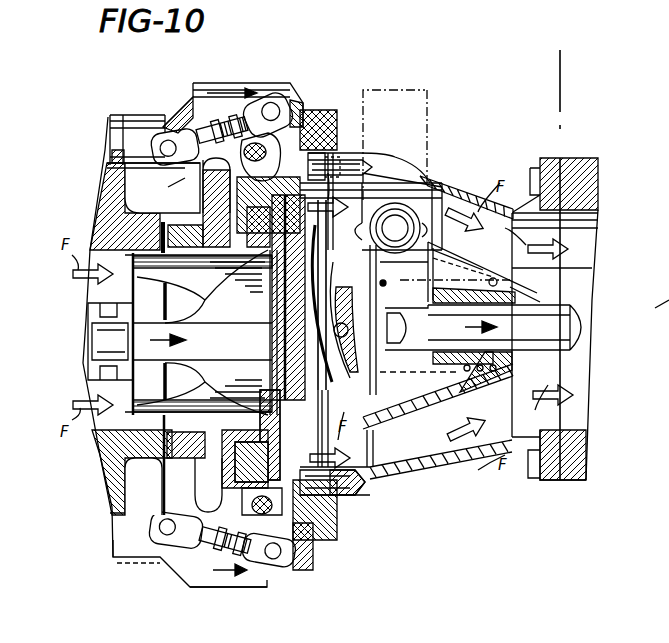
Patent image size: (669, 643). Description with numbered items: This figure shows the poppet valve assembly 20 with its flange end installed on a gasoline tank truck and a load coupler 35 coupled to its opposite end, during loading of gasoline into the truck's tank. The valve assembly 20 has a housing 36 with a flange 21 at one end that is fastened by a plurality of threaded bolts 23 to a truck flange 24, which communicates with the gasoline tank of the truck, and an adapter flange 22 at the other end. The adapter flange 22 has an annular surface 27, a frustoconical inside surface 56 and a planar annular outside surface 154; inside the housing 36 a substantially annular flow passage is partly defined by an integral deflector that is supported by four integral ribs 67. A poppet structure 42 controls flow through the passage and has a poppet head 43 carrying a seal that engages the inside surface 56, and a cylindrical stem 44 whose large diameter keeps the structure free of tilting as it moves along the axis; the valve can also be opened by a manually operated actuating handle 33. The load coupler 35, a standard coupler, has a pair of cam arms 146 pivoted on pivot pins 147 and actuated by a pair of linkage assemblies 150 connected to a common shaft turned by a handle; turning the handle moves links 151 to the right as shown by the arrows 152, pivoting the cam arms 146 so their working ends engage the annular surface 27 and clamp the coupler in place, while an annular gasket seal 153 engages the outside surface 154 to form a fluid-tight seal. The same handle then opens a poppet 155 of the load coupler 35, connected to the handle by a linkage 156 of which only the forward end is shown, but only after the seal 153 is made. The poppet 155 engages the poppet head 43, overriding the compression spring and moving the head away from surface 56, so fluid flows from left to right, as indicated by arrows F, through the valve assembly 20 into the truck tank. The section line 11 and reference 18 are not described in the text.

The section line 11 is at (575, 58).
The pump assembly 18 is at (662, 309).
The valve assembly 20 is at (455, 112).
The flange 21 is at (555, 158).
The adapter flange 22 is at (202, 334).
The threaded bolts 23 is at (513, 200).
The truck flange 24 is at (598, 156).
The annular surface 27 is at (330, 134).
The actuating handle 33 is at (410, 88).
The load coupler 35 is at (140, 110).
The housing 36 is at (456, 170).
The poppet structure 42 is at (364, 381).
The poppet head 43 is at (282, 352).
The cylindrical stem 44 is at (483, 348).
The frustoconical inside surface 56 is at (202, 286).
The integral ribs 67 is at (472, 462).
The cam arms 146 is at (292, 114).
The pivot pins 147 is at (315, 114).
The linkage assemblies 150 is at (180, 120).
The links 151 is at (272, 92).
The arrows 152 is at (232, 82).
The annular gasket seal 153 is at (192, 482).
The planar annular outside surface 154 is at (202, 389).
The poppet 155 is at (202, 338).
The linkage 156 is at (90, 335).